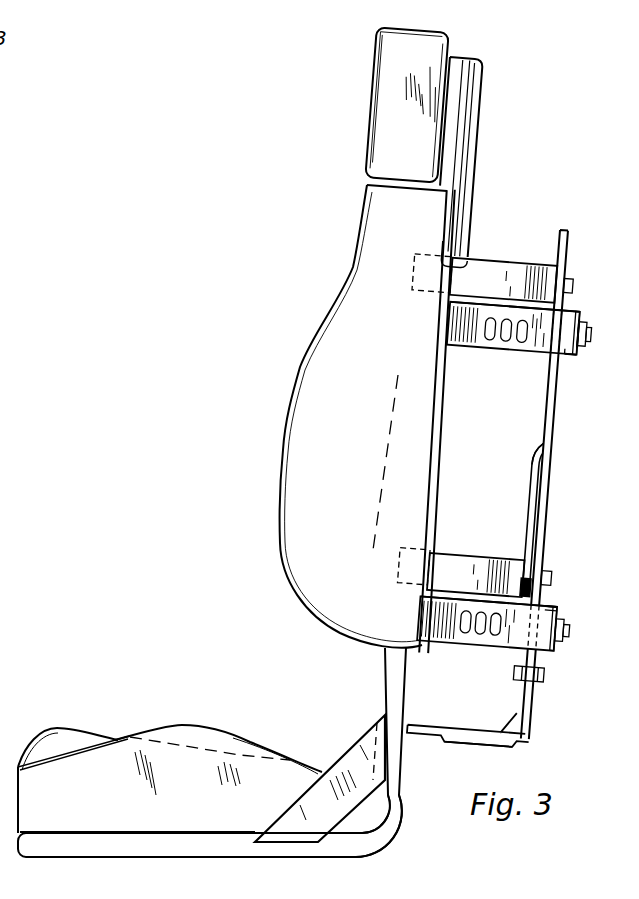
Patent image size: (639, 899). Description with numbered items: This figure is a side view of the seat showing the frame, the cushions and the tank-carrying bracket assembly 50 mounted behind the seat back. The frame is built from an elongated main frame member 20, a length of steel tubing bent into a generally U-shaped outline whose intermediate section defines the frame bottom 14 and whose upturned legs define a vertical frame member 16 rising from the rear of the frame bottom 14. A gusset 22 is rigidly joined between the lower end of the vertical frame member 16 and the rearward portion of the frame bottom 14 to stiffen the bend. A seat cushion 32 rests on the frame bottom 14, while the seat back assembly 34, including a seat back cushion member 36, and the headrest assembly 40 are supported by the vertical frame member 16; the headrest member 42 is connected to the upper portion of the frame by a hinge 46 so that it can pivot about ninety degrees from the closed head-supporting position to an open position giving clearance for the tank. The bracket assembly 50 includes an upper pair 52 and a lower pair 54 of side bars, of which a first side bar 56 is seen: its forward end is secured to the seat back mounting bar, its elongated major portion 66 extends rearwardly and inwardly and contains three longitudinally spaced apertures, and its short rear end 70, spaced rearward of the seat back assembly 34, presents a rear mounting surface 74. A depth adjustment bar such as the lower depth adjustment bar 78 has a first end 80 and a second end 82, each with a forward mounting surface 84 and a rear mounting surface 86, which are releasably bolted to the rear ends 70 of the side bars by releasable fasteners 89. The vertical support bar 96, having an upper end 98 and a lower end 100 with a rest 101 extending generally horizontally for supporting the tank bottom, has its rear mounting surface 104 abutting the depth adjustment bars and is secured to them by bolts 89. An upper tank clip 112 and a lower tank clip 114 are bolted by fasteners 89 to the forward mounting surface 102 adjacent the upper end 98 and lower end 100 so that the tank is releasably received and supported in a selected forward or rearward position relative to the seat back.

The frame bottom 14 is at (80, 840).
The vertical frame member 16 is at (388, 673).
The main frame member 20 is at (365, 831).
The gusset 22 is at (365, 740).
The seat cushion 32 is at (57, 736).
The seat back assembly 34 is at (288, 413).
The seat back cushion member 36 is at (298, 456).
The headrest assembly 40 is at (361, 91).
The headrest member 42 is at (377, 48).
The hinge 46 is at (474, 52).
The bracket assembly 50 is at (595, 242).
The upper pair of first and second side bars 52 is at (469, 352).
The lower pair of first and second side bars 54 is at (470, 650).
The first side bar 56 is at (458, 343).
The major portion 66 is at (500, 348).
The rear end 70 is at (595, 318).
The rear mounting surface 74 is at (588, 358).
The lower depth adjustment bar 78 is at (563, 612).
The first end 80 is at (594, 328).
The second end 82 is at (597, 340).
The forward mounting surface 84 is at (571, 356).
The rear mounting surface 86 is at (590, 305).
The releasable fastener 89 is at (576, 282).
The vertical support bar 96 is at (551, 472).
The upper end 98 is at (565, 230).
The lower end 100 is at (531, 736).
The rest 101 is at (470, 746).
The forward mounting surface 102 is at (545, 416).
The rear mounting surface 104 is at (558, 436).
The upper tank clip 112 is at (488, 265).
The lower tank clip 114 is at (433, 555).